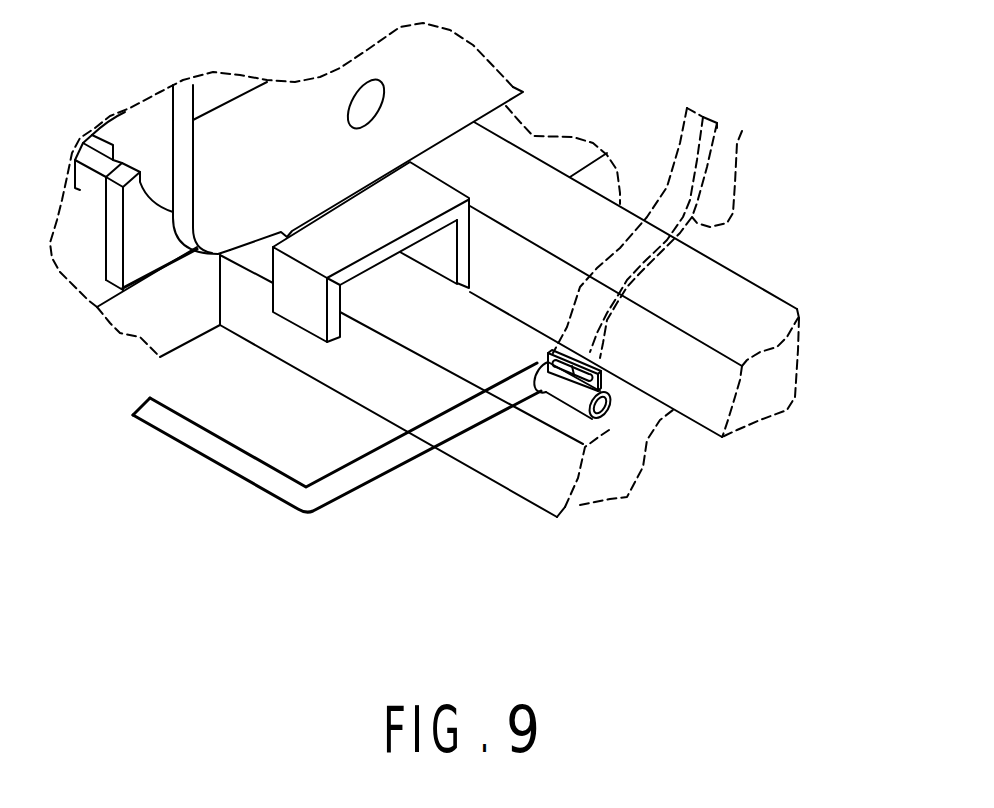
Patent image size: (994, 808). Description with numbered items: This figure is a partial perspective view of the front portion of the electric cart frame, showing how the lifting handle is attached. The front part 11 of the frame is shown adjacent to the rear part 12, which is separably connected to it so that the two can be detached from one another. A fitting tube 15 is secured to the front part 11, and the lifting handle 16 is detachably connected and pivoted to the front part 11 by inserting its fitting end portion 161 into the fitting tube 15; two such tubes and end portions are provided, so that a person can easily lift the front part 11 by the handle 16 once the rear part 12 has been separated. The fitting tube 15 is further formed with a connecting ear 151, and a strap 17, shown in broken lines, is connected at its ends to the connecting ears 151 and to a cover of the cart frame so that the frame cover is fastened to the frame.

The front part 11 is at (477, 467).
The rear part 12 is at (747, 293).
The fitting tube 15 is at (597, 482).
The connecting ear 151 is at (610, 392).
The lifting handle 16 is at (375, 483).
The fitting end portion 161 is at (603, 418).
The strap 17 is at (742, 131).